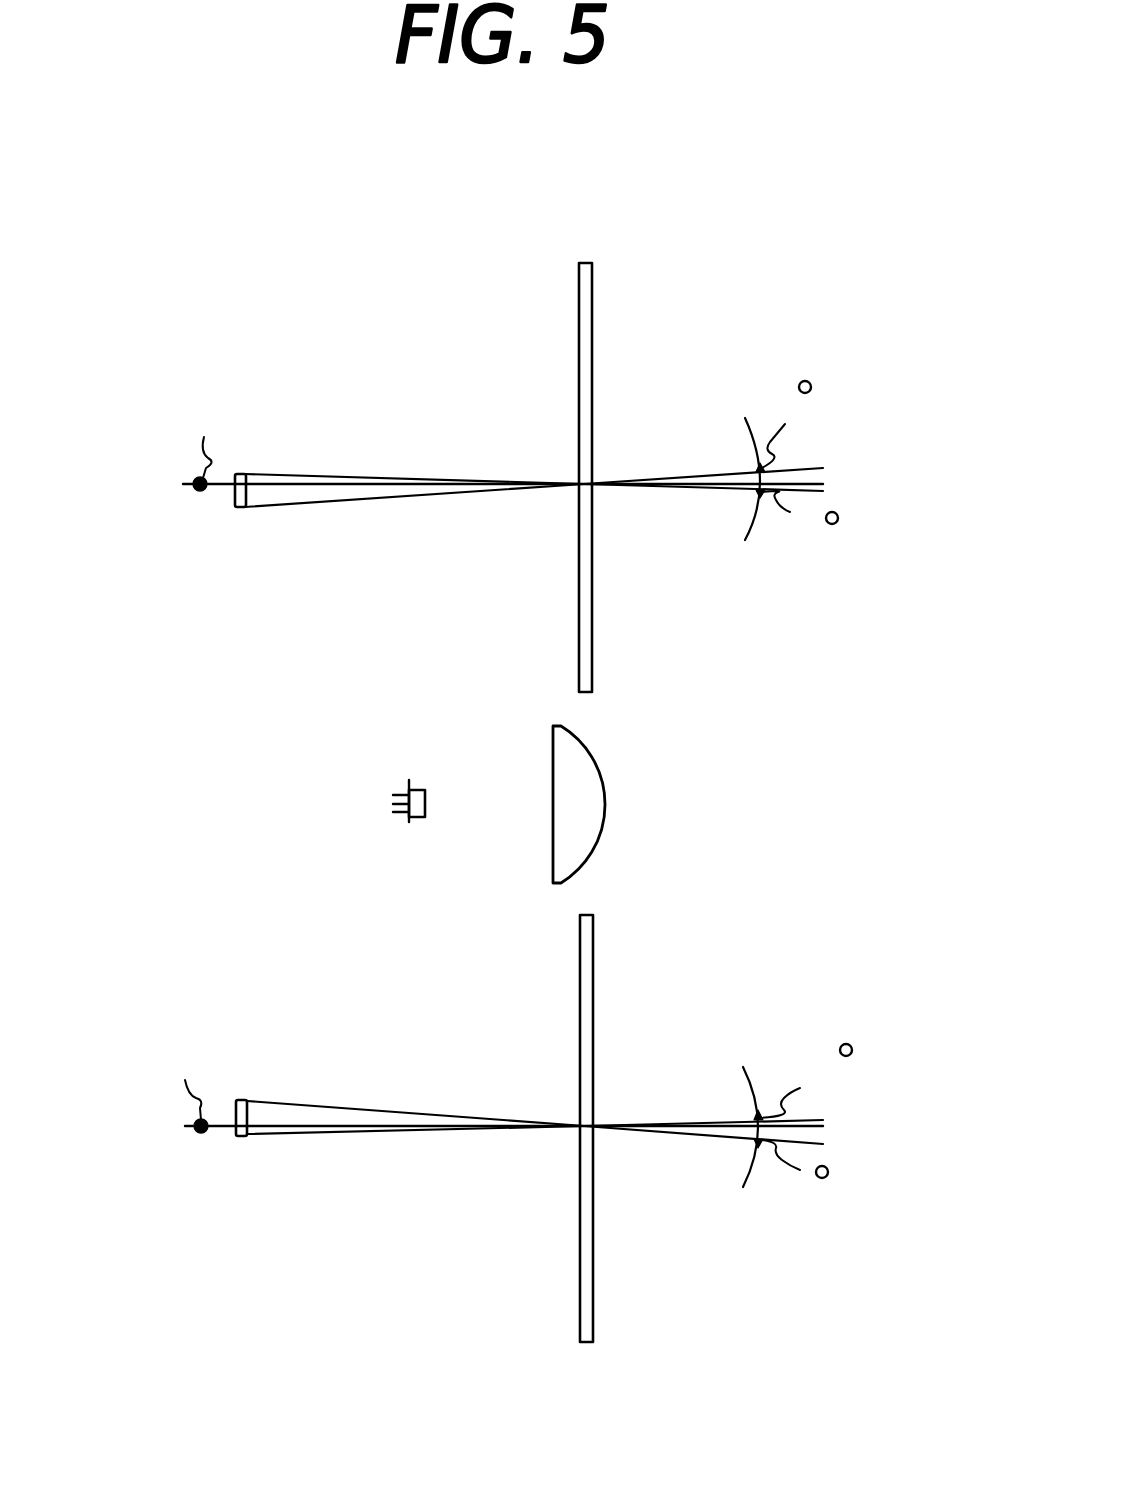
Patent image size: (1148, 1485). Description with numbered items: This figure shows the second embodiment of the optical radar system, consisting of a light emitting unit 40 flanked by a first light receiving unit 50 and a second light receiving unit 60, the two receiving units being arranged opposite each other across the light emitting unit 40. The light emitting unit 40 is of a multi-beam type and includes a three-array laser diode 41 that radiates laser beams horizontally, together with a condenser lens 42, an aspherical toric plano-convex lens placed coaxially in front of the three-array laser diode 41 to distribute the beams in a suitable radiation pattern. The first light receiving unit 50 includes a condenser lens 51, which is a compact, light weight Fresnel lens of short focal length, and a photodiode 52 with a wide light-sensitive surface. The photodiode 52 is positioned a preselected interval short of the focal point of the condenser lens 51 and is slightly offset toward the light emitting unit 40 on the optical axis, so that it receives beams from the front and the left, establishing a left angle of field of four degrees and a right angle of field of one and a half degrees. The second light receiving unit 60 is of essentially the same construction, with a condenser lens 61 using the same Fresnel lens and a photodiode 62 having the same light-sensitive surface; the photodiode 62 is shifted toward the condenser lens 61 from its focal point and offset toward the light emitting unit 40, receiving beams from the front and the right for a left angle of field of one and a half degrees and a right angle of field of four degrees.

The light emitting unit 40 is at (707, 838).
The three-array laser diode 41 is at (417, 790).
The condenser lens 42 is at (598, 792).
The first light receiving unit 50 is at (727, 605).
The condenser lens 51 is at (592, 330).
The photodiode 52 is at (243, 472).
The second light receiving unit 60 is at (718, 1283).
The condenser lens 61 is at (593, 988).
The photodiode 62 is at (240, 1100).